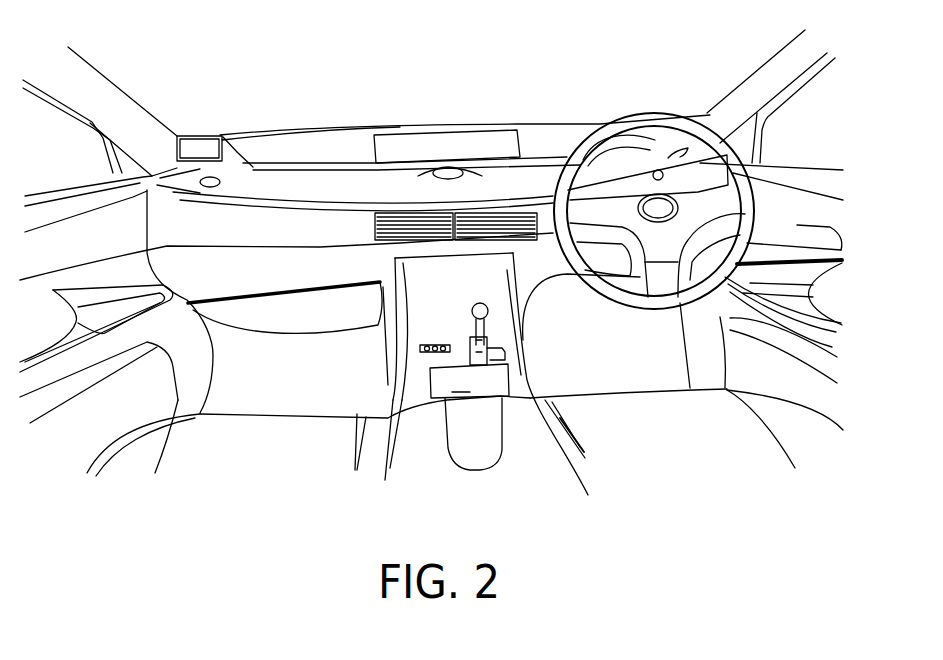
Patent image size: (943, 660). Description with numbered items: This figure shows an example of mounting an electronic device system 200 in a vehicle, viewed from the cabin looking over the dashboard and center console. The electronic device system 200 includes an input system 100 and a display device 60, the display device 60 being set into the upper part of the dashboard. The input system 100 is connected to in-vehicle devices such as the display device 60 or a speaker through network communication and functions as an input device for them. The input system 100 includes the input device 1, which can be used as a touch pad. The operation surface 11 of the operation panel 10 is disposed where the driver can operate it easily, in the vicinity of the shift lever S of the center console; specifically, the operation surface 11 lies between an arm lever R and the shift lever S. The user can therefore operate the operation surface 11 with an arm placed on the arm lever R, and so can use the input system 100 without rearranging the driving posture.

The electronic device system 200 is at (635, 58).
The display device 60 is at (398, 130).
The shift lever S is at (485, 320).
The input device 1 is at (512, 371).
The operation panel 10 is at (490, 382).
The operation surface 11 is at (460, 384).
The input system 100 is at (421, 383).
The arm lever R is at (523, 422).